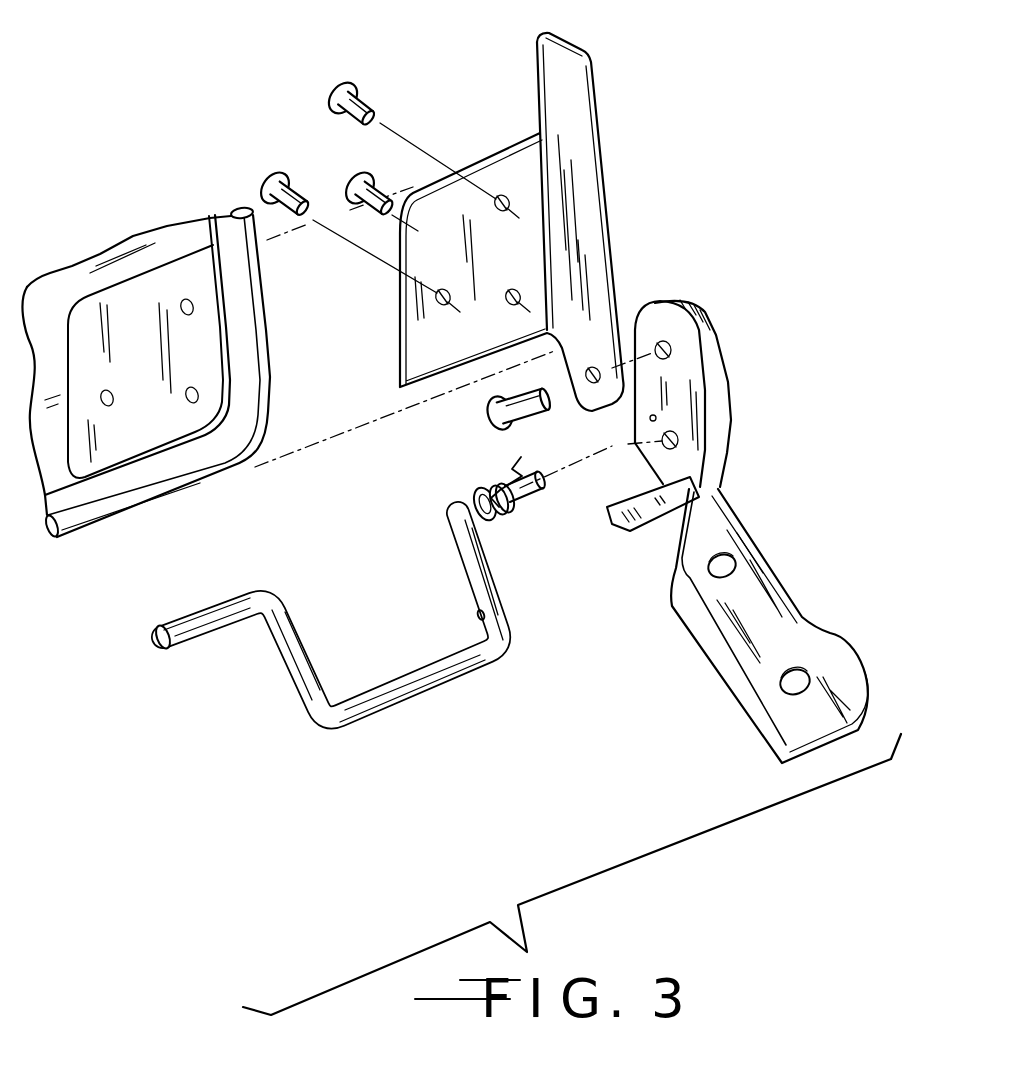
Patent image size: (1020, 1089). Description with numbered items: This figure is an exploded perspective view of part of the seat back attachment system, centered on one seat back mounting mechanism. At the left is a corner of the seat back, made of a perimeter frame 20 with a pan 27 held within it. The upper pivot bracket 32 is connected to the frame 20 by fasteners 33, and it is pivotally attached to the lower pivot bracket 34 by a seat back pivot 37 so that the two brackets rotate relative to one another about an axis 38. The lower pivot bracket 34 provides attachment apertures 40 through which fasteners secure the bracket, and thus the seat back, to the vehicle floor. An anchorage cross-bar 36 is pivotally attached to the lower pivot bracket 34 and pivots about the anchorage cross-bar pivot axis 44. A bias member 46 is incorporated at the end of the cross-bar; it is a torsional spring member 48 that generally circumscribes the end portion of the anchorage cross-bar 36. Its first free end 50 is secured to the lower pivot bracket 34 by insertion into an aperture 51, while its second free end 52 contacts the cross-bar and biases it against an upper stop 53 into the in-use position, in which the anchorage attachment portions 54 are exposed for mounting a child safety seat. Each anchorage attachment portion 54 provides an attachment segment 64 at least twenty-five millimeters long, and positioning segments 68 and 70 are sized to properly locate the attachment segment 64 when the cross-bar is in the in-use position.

The frame 20 is at (88, 502).
The pan 27 is at (68, 290).
The upper pivot bracket 32 is at (602, 143).
The fasteners 33 is at (376, 108).
The lower pivot bracket 34 is at (769, 588).
The anchorage cross-bar 36 is at (207, 643).
The seat back pivot 37 is at (490, 415).
The axis 38 is at (704, 363).
The attachment apertures 40 is at (732, 560).
The anchorage cross-bar pivot axis 44 is at (588, 476).
The bias member 46 is at (480, 505).
The torsional spring member 48 is at (468, 493).
The first free end 50 is at (513, 460).
The aperture 51 is at (600, 437).
The second free end 52 is at (478, 615).
The upper stop 53 is at (656, 512).
The anchorage attachment portions 54 is at (328, 652).
The attachment segment 64 is at (428, 692).
The positioning segment 68 is at (458, 548).
The positioning segment 70 is at (303, 632).